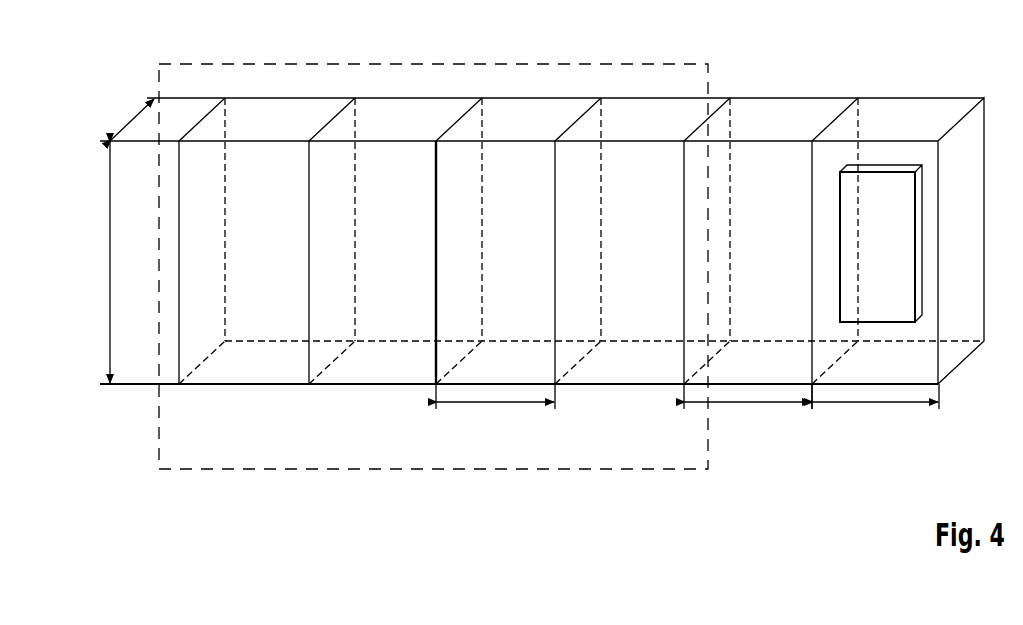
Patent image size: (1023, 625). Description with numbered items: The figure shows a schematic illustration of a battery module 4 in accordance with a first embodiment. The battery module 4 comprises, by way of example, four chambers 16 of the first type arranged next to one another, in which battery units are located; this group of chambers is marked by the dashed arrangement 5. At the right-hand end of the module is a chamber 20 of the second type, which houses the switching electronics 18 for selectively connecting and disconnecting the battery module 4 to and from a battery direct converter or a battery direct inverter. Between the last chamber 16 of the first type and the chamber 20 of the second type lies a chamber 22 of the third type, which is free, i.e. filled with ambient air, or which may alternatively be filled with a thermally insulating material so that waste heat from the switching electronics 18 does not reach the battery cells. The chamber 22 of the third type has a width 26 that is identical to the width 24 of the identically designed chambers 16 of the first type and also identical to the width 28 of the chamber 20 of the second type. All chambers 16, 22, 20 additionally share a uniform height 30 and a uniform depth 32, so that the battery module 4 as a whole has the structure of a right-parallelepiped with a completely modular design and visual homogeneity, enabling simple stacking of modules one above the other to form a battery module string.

The battery module 4 is at (655, 46).
The arrangement of the chambers of the first type 5 is at (334, 78).
The chamber of the first type 16 is at (628, 375).
The switching electronics 18 is at (898, 323).
The chamber of the second type 20 is at (892, 105).
The chamber of the third type 22 is at (766, 104).
The width of the chambers of the first type 24 is at (500, 405).
The width of the chamber of the third type 26 is at (752, 408).
The width of the chamber of the second type 28 is at (878, 408).
The height 30 is at (108, 233).
The depth 32 is at (132, 119).